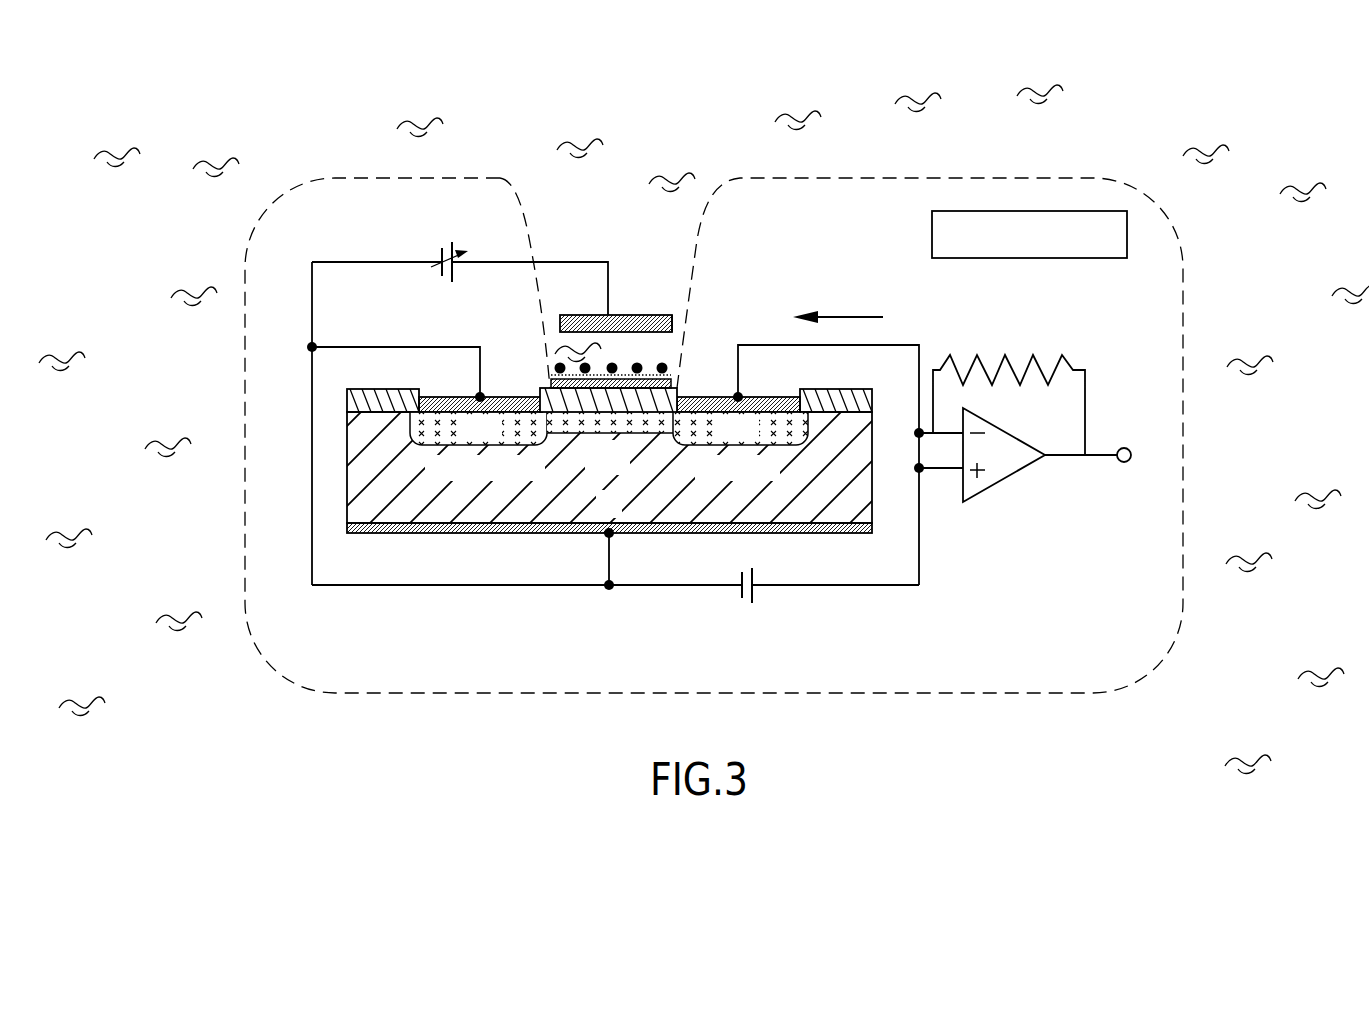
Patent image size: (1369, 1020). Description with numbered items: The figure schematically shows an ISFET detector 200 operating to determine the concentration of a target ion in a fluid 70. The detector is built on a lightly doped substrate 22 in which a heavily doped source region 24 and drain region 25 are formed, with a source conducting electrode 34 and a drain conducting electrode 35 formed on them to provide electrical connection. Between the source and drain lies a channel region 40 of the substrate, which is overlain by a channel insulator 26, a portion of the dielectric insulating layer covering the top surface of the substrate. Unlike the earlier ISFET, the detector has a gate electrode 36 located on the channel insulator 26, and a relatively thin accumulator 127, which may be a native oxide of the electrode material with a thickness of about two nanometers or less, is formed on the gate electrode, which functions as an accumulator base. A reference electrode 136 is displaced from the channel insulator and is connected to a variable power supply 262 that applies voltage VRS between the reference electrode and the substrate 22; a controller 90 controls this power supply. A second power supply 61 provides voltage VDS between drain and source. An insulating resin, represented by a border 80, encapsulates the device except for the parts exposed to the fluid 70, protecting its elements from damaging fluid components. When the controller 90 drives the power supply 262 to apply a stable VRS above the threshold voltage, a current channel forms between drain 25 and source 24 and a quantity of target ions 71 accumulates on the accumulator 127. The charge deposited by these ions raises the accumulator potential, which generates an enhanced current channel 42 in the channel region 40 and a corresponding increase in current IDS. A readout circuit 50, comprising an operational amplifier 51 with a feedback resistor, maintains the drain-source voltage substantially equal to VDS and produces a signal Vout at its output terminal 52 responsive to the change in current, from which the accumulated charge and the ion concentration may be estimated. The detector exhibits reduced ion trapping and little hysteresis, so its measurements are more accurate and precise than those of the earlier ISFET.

The ISFET detector 200 is at (334, 111).
The insulating resin border 80 is at (1040, 177).
The controller 90 is at (932, 232).
The power supply 262 is at (440, 258).
The power supply 61 is at (755, 597).
The substrate 22 is at (623, 469).
The source region 24 is at (437, 430).
The drain region 25 is at (703, 425).
The enhanced current channel 42 is at (633, 437).
The source conducting electrode 34 is at (512, 397).
The drain conducting electrode 35 is at (763, 397).
The channel insulator 26 is at (548, 392).
The gate electrode 36 is at (617, 378).
The accumulator 127 is at (606, 375).
The reference electrode 136 is at (597, 315).
The accumulated target ions 71 is at (677, 318).
The fluid 70 is at (696, 178).
The channel region 40 is at (563, 462).
The readout circuit 50 is at (1012, 500).
The operational amplifier 51 is at (996, 463).
The output terminal 52 is at (1125, 447).